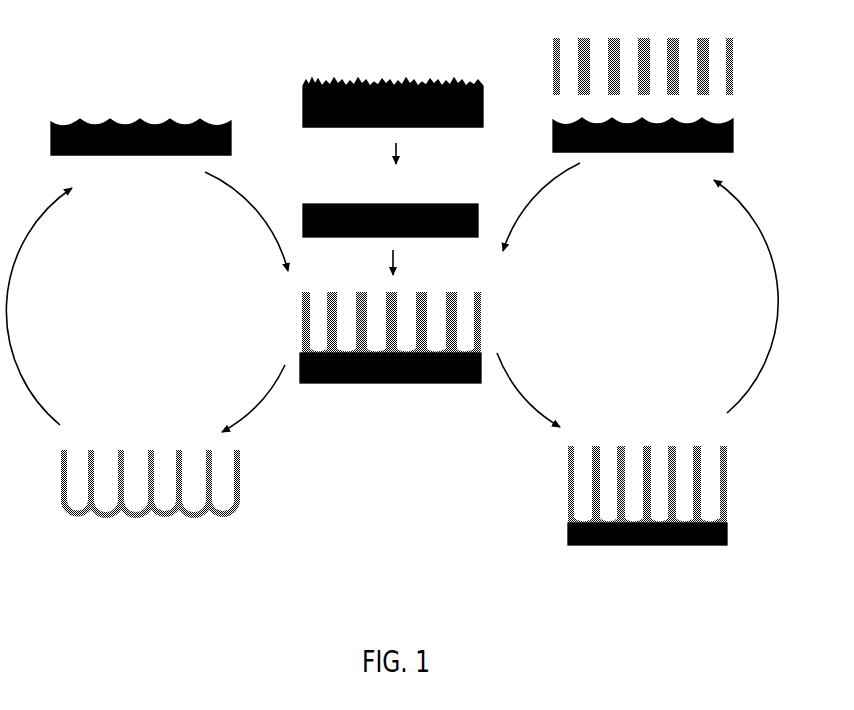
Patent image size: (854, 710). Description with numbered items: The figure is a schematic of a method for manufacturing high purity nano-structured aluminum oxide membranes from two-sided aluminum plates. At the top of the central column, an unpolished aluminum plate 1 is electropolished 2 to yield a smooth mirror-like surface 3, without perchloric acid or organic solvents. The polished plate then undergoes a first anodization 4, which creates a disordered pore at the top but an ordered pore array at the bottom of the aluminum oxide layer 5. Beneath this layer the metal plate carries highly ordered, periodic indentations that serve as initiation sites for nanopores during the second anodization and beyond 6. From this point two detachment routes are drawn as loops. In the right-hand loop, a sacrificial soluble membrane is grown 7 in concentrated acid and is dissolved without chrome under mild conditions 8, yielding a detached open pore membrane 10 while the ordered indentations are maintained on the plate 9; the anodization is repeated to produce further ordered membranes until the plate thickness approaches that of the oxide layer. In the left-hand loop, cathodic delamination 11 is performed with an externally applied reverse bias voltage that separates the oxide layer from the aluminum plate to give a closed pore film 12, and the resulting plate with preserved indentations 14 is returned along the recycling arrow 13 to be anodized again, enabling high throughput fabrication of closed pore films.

The unpolished aluminum plate 1 is at (483, 110).
The electropolishing step 2 is at (406, 157).
The smooth mirror-like surface 3 is at (478, 205).
The first anodization 4 is at (406, 265).
The aluminum oxide layer 5 is at (481, 300).
The second anodization and beyond 6 is at (420, 383).
The sacrificial soluble membrane growth 7 is at (513, 385).
The dissolution step 8 is at (746, 296).
The plate with ordered indentations 9 is at (733, 146).
The detached open pore membrane 10 is at (729, 52).
The cathodic delamination 11 is at (253, 398).
The closed pore film 12 is at (241, 480).
The recycling step 13 is at (39, 306).
The plate with preserved indentations 14 is at (231, 134).